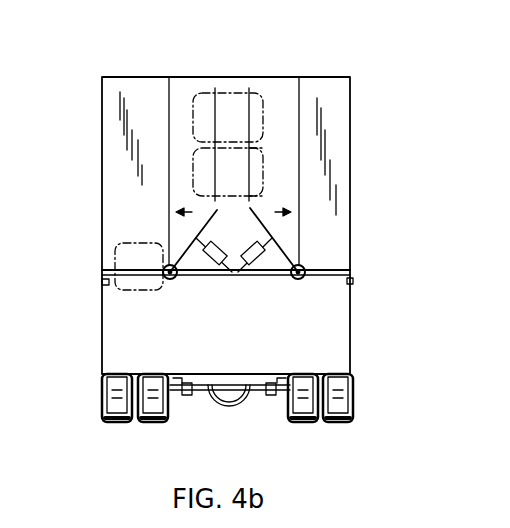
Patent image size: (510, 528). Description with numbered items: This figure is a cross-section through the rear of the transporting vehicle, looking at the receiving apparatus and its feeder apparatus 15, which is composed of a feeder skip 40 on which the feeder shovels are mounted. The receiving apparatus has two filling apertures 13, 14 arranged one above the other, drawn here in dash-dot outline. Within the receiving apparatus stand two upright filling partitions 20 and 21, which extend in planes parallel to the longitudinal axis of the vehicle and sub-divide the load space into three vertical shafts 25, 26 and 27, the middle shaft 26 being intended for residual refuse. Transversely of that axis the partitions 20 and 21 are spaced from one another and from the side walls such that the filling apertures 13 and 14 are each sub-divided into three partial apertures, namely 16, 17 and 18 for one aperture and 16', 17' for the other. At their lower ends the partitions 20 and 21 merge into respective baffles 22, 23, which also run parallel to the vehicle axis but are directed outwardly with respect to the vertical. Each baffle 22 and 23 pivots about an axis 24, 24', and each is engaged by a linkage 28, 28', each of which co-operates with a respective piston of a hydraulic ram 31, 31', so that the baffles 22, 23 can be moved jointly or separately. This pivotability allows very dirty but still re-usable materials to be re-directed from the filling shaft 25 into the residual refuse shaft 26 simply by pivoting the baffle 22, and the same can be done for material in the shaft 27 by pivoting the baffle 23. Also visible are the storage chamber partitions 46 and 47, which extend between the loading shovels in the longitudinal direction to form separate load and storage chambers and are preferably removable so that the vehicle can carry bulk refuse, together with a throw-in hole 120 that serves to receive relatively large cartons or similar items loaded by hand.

The filling aperture 13 is at (195, 95).
The filling aperture 14 is at (283, 162).
The feeder apparatus 15 is at (97, 347).
The partial aperture 16 is at (268, 121).
The partial aperture 16' is at (271, 180).
The partial aperture 17 is at (241, 91).
The partial aperture 17' is at (270, 152).
The partial aperture 18 is at (205, 100).
The filling partition 20 is at (253, 142).
The filling partition 21 is at (193, 148).
The baffle 22 is at (300, 265).
The baffle 23 is at (169, 245).
The pivot axis 24 is at (157, 293).
The pivot axis 24' is at (310, 293).
The vertical shaft 25 is at (290, 100).
The vertical shaft 26 is at (246, 234).
The vertical shaft 27 is at (177, 107).
The linkage 28 is at (193, 267).
The linkage 28' is at (274, 257).
The hydraulic ram 31 is at (214, 272).
The hydraulic ram 31' is at (253, 275).
The feeder skip 40 is at (352, 340).
The storage chamber partition 46 is at (167, 116).
The storage chamber partition 47 is at (300, 132).
The throw-in hole 120 is at (128, 292).